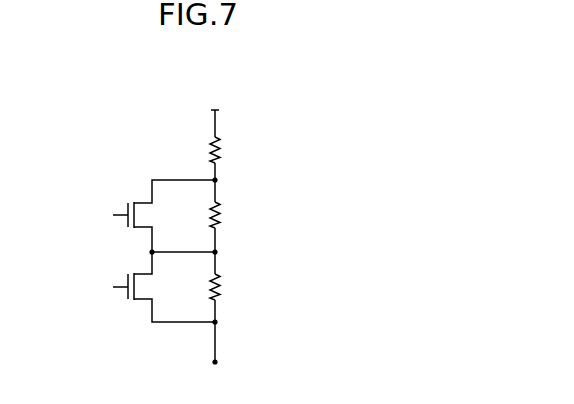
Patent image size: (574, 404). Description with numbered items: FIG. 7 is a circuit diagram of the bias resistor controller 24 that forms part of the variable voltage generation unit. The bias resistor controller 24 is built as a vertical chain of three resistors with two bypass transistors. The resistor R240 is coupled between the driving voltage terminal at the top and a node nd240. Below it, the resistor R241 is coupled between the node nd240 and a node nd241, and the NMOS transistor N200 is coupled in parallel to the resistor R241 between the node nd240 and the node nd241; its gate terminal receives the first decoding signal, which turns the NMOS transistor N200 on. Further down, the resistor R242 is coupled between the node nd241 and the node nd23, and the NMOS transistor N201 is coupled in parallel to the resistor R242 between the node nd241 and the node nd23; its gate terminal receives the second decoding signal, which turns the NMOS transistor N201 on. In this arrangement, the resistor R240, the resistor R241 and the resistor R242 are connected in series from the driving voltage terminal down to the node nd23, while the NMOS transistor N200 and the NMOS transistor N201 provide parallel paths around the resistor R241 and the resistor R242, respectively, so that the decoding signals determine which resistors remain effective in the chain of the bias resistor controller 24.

The bias resistor controller 24 is at (347, 63).
The resistor R240 is at (240, 150).
The resistor R241 is at (240, 215).
The resistor R242 is at (240, 287).
The NMOS transistor N200 is at (164, 216).
The NMOS transistor N201 is at (164, 287).
The node nd240 is at (244, 178).
The node nd241 is at (244, 248).
The node nd23 is at (211, 375).